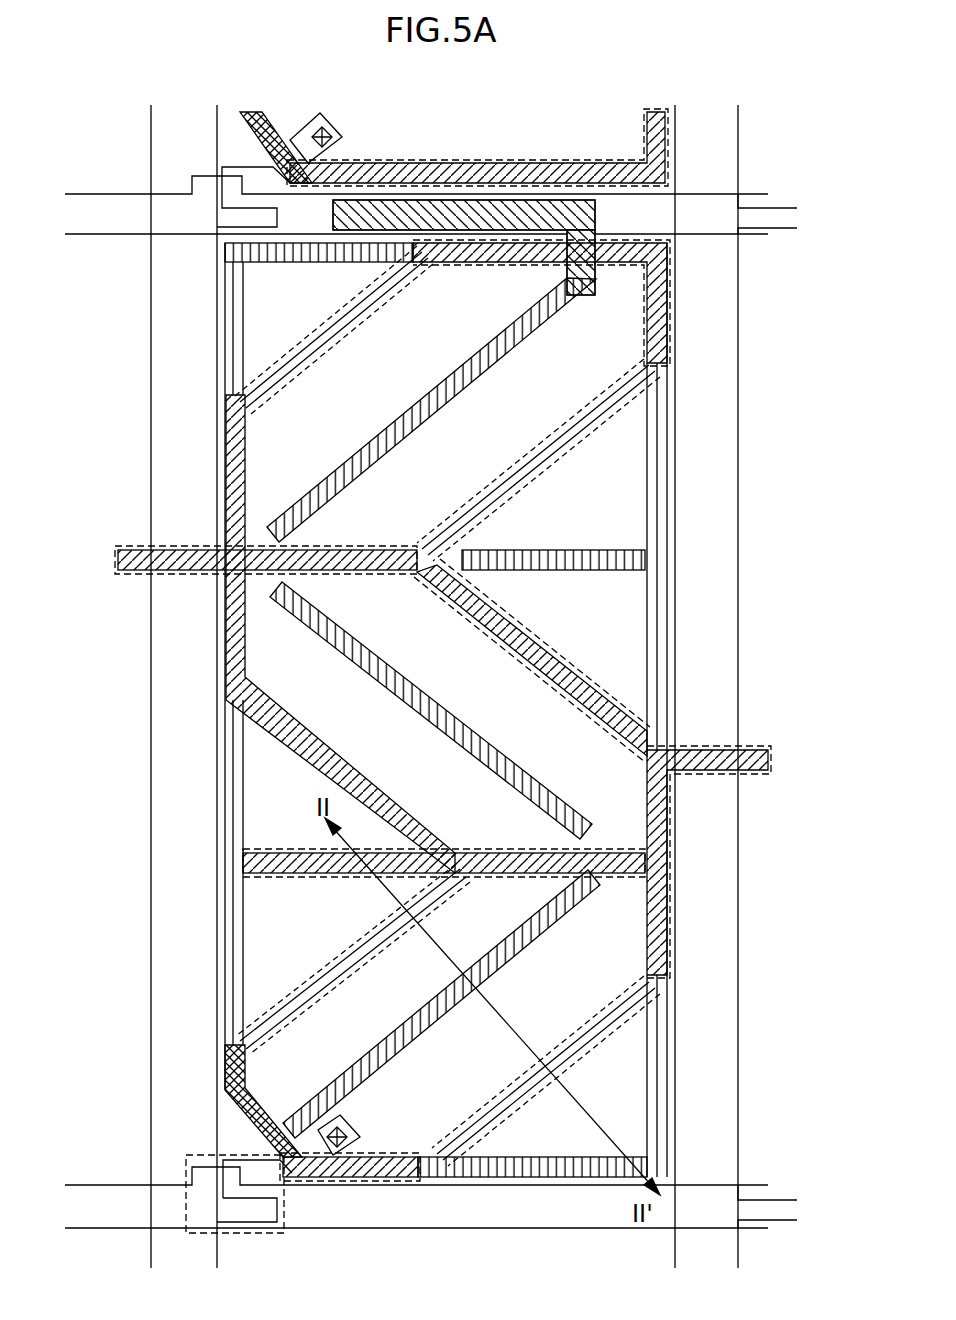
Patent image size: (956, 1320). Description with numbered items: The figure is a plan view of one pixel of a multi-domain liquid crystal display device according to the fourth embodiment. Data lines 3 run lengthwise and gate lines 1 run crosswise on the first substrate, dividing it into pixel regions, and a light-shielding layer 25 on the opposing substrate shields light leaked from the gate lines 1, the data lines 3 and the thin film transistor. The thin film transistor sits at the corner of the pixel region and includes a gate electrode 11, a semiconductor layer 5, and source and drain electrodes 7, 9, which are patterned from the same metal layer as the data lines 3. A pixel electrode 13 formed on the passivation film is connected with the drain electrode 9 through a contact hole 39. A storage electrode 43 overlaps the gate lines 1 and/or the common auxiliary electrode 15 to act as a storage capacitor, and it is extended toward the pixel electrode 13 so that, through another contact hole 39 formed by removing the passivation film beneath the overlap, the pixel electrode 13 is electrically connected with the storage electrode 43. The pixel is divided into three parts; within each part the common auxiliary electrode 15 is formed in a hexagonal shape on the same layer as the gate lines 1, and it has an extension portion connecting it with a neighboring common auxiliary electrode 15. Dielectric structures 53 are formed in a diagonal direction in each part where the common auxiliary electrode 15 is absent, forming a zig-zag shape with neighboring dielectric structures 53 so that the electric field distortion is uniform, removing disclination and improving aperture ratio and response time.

The gate line 1 is at (130, 215).
The data line 3 is at (160, 386).
The semiconductor layer 5 is at (215, 1150).
The source electrode 7 is at (242, 1217).
The drain electrode 9 is at (293, 1192).
The gate electrode 11 is at (205, 1185).
The pixel electrode 13 is at (240, 630).
The common auxiliary electrode 15 is at (567, 672).
The light-shielding layer 25 is at (227, 470).
The contact hole 39 is at (335, 1142).
The storage electrode 43 is at (460, 210).
The dielectric structure 53 is at (450, 708).